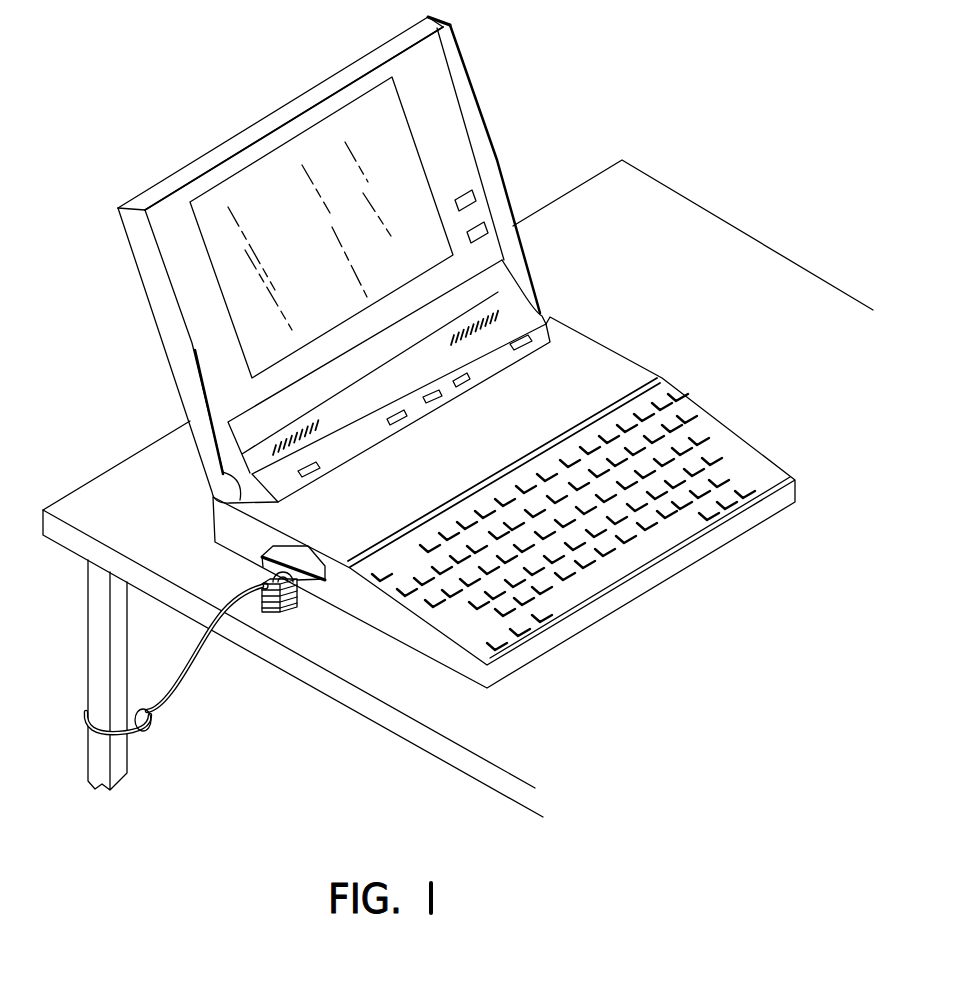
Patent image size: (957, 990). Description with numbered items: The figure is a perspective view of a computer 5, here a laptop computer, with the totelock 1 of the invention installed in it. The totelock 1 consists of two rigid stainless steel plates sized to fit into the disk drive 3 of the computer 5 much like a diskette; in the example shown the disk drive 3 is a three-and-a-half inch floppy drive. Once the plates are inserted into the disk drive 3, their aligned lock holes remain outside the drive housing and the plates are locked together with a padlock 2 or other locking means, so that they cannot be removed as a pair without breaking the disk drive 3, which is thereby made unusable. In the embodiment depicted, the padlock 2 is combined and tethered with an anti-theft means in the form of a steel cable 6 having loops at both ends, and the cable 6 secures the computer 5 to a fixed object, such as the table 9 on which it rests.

The totelock 1 is at (183, 552).
The padlock 2 is at (278, 609).
The disk drive 3 is at (340, 592).
The computer 5 is at (604, 368).
The steel cable 6 is at (180, 683).
The table 9 is at (112, 468).